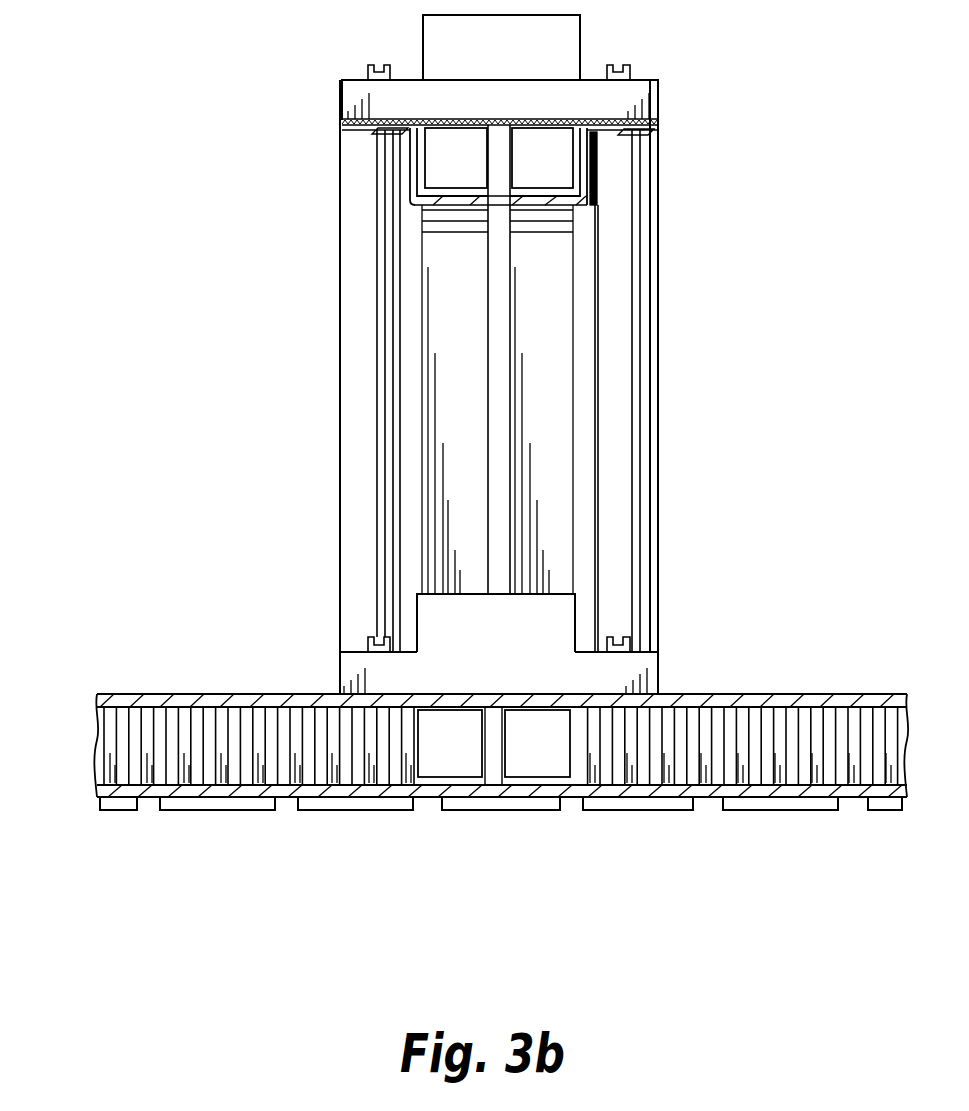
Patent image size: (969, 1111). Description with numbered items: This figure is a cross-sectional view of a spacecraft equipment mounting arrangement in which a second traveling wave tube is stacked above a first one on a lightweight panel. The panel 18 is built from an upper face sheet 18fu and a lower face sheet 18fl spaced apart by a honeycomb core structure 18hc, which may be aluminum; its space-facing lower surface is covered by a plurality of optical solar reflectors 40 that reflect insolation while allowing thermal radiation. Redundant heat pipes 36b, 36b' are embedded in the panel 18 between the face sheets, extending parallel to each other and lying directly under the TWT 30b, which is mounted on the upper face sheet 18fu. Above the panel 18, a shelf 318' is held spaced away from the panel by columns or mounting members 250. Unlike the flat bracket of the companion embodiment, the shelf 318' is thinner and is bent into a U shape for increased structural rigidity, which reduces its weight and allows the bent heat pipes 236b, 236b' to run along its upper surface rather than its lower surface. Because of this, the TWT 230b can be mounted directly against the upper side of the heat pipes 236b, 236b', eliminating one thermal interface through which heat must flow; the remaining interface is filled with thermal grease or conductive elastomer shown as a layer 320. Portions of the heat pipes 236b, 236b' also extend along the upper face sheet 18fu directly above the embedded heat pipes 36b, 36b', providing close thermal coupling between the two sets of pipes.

The TWT 230b is at (580, 36).
The layer 320 is at (658, 125).
The heat pipe 236b is at (370, 390).
The heat pipe 236b' is at (629, 390).
The shelf 318' is at (568, 359).
The members 250 is at (340, 330).
The TWT 30b is at (655, 674).
The panel 18 is at (236, 676).
The upper face sheet 18fu is at (147, 694).
The honeycomb core structure 18hc is at (97, 742).
The lower face sheet 18fl is at (150, 797).
The optical solar reflectors 40 is at (345, 810).
The heat pipe 36b is at (453, 784).
The heat pipe 36b' is at (555, 785).